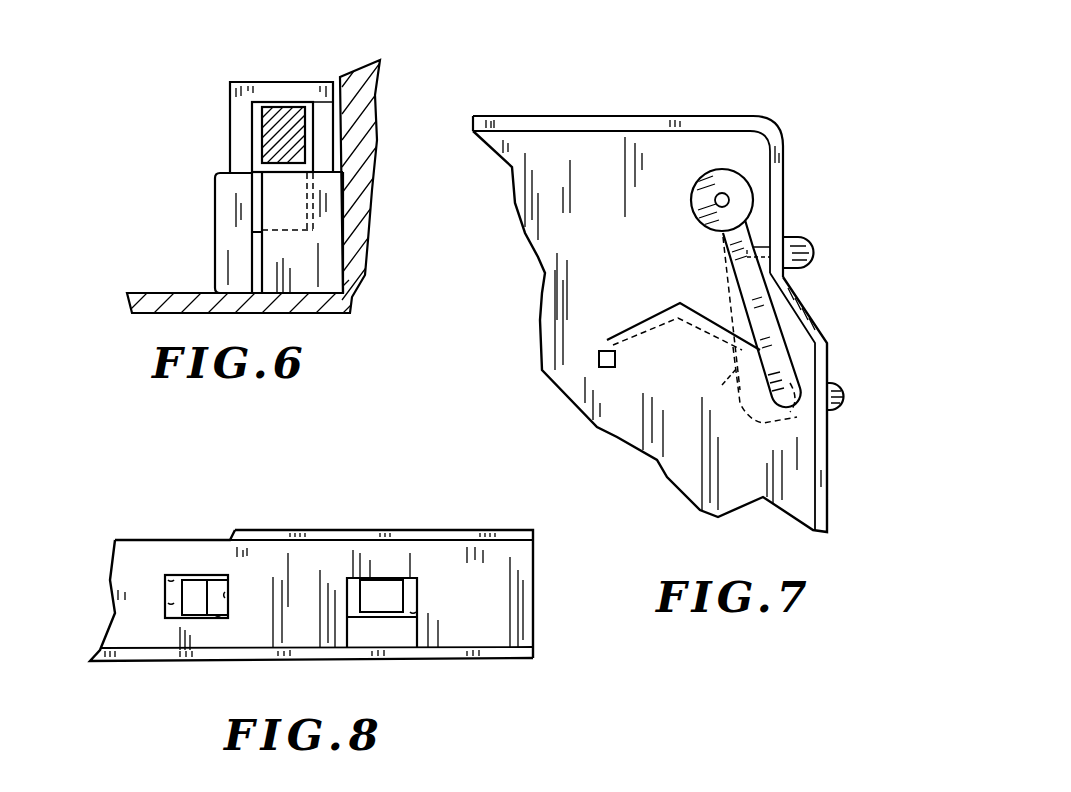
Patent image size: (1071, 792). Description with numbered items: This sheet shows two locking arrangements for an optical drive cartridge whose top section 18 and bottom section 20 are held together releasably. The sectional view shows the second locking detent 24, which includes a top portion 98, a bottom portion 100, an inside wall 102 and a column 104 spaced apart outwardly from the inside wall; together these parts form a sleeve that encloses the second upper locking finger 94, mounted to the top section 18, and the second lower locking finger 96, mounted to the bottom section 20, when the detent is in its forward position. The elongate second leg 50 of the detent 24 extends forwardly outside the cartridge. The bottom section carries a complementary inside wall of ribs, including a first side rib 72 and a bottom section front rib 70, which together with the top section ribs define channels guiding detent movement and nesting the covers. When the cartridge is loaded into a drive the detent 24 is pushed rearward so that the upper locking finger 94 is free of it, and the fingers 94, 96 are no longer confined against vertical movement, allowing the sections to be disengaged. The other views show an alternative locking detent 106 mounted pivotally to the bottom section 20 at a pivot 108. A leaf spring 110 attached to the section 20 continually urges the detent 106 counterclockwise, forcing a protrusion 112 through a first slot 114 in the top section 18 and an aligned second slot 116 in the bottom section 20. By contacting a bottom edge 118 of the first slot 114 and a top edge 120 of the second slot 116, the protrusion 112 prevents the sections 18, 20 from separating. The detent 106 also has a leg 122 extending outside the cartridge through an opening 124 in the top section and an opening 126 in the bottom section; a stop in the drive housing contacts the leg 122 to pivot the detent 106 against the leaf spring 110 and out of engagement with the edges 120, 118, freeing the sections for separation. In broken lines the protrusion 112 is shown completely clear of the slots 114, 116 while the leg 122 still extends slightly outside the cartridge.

In FIG. 8, the top section 18 is at (323, 555).
In FIG. 7, the bottom section 20 is at (713, 142).
In FIG. 8, the bottom section 20 is at (110, 613).
In FIG. 6, the second locking detent 24 is at (215, 72).
In FIG. 6, the second leg 50 is at (228, 185).
In FIG. 7, the bottom section front rib 70 is at (597, 125).
In FIG. 6, the first side rib 72 is at (360, 208).
In FIG. 7, the first side rib 72 is at (820, 482).
In FIG. 8, the first side rib 72 is at (143, 548).
In FIG. 6, the second upper locking finger 94 is at (282, 113).
In FIG. 6, the second lower locking finger 96 is at (322, 263).
In FIG. 6, the top portion 98 is at (318, 90).
In FIG. 6, the bottom portion 100 is at (257, 250).
In FIG. 6, the inside wall 102 is at (322, 130).
In FIG. 6, the column 104 is at (243, 128).
In FIG. 7, the alternative locking detent 106 is at (784, 358).
In FIG. 7, the pivot 108 is at (729, 197).
In FIG. 7, the leaf spring 110 is at (663, 318).
In FIG. 7, the protrusion 112 is at (845, 397).
In FIG. 8, the protrusion 112 is at (193, 595).
In FIG. 8, the first slot 114 is at (177, 614).
In FIG. 8, the second slot 116 is at (226, 590).
In FIG. 8, the bottom edge 118 is at (175, 580).
In FIG. 8, the top edge 120 is at (220, 617).
In FIG. 7, the leg 122 is at (808, 250).
In FIG. 8, the leg 122 is at (383, 595).
In FIG. 8, the opening 124 is at (415, 610).
In FIG. 8, the opening 126 is at (418, 598).